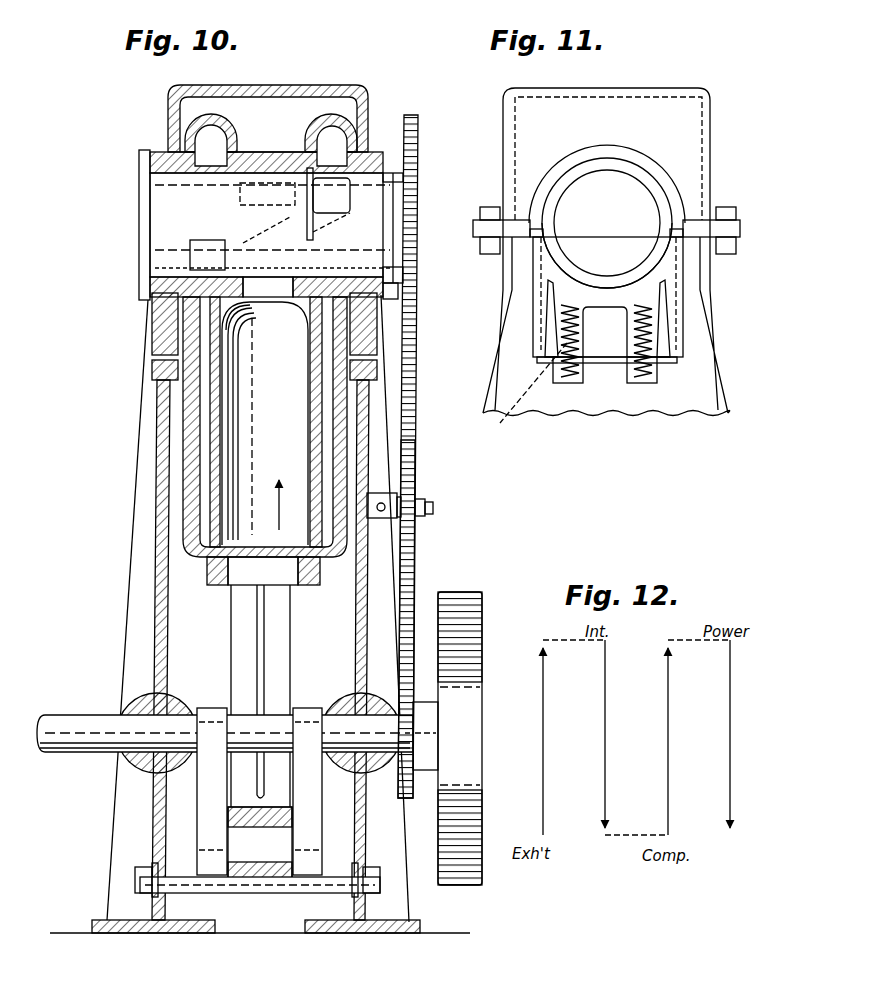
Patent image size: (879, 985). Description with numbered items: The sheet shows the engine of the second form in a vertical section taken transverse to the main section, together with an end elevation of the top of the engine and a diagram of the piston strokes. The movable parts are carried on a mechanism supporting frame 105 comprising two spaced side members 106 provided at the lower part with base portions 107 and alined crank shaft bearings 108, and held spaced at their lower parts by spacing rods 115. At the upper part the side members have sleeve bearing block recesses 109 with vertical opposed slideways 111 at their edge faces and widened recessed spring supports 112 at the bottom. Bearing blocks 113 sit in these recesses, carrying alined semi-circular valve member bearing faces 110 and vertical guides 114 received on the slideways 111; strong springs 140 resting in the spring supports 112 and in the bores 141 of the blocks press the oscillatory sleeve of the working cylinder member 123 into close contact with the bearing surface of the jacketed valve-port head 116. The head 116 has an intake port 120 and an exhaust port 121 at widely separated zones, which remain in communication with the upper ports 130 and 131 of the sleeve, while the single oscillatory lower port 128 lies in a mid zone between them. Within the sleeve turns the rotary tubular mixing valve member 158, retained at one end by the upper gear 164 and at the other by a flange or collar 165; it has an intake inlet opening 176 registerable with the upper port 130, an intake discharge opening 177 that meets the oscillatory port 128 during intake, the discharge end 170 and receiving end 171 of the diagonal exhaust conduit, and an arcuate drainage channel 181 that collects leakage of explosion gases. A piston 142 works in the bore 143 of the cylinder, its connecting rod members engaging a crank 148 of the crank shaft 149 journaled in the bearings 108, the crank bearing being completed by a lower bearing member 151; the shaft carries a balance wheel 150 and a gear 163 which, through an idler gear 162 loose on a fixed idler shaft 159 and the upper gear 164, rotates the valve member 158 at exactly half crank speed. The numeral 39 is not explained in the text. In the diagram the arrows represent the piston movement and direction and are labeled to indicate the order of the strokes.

In FIG. 10, the jacketed valve-port head 116 is at (297, 86).
In FIG. 11, the jacketed valve-port head 116 is at (606, 189).
In FIG. 10, the intake port 120 is at (207, 145).
In FIG. 10, the exhaust port 121 is at (367, 118).
In FIG. 10, the upper port 130 is at (150, 156).
In FIG. 10, the upper port 131 is at (411, 118).
In FIG. 10, the rotary tubular mixing valve member 158 is at (276, 228).
In FIG. 11, the rotary tubular mixing valve member 158 is at (607, 216).
In FIG. 10, the intake discharge opening 177 is at (235, 193).
In FIG. 10, the discharge end 170 is at (328, 204).
In FIG. 10, the arcuate drainage channel 181 is at (307, 222).
In FIG. 10, the flange or collar 165 is at (143, 241).
In FIG. 10, the intake inlet opening 176 is at (190, 255).
In FIG. 10, the oscillatory lower port 128 is at (266, 290).
In FIG. 10, the upper gear 164 is at (405, 302).
In FIG. 10, the working cylinder member 123 is at (185, 440).
In FIG. 10, the bore 143 is at (265, 423).
In FIG. 10, the piston rings 39 is at (240, 325).
In FIG. 10, the receiving end 171 is at (243, 307).
In FIG. 10, the piston 142 is at (266, 547).
In FIG. 10, the mechanism supporting frame 105 is at (133, 497).
In FIG. 10, the side members 106 is at (393, 590).
In FIG. 10, the crank shaft bearings 108 is at (137, 770).
In FIG. 10, the crank shaft 149 is at (225, 733).
In FIG. 10, the crank 148 is at (259, 795).
In FIG. 10, the spacing rods 115 is at (285, 882).
In FIG. 10, the lower bearing member 151 is at (255, 893).
In FIG. 10, the base portions 107 is at (140, 933).
In FIG. 10, the idler gear 162 is at (405, 470).
In FIG. 10, the fixed idler shaft 159 is at (395, 505).
In FIG. 10, the gear 163 is at (440, 703).
In FIG. 10, the balance wheel 150 is at (472, 760).
In FIG. 11, the valve member bearing faces 110 is at (552, 267).
In FIG. 11, the bearing blocks 113 is at (668, 267).
In FIG. 11, the sleeve bearing block recesses 109 is at (606, 326).
In FIG. 11, the vertical opposed slideways 111 is at (677, 313).
In FIG. 11, the springs 140 is at (568, 360).
In FIG. 11, the recessed spring supports 112 is at (630, 383).
In FIG. 11, the vertical guides 114 is at (683, 337).
In FIG. 11, the bores 141 is at (524, 394).